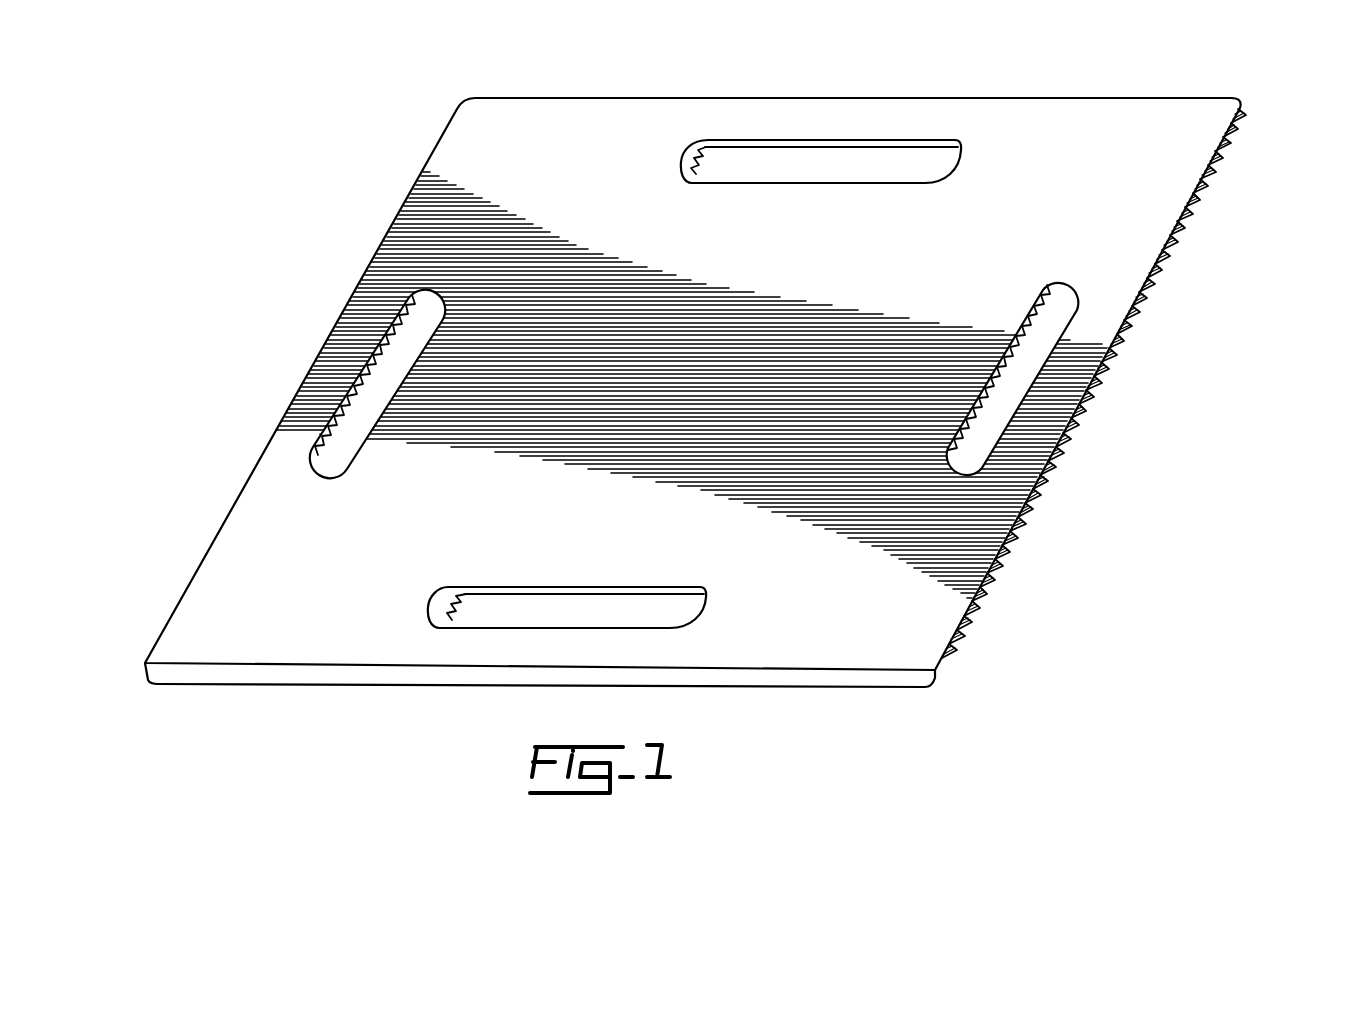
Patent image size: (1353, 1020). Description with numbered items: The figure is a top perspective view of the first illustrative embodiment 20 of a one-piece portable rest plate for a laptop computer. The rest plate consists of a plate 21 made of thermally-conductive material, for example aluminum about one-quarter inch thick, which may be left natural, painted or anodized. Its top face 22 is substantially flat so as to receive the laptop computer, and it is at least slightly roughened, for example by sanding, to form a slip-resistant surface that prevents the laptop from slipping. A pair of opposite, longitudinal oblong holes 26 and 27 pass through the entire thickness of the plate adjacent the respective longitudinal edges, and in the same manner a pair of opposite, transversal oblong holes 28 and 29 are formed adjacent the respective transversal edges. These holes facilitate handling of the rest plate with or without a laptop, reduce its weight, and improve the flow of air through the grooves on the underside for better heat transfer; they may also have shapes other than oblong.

The first illustrative embodiment 20 is at (425, 152).
The plate 21 is at (1212, 186).
The top face 22 is at (212, 597).
The longitudinal oblong hole 26 is at (816, 160).
The longitudinal oblong hole 27 is at (511, 615).
The transversal oblong hole 28 is at (372, 392).
The transversal oblong hole 29 is at (1013, 392).